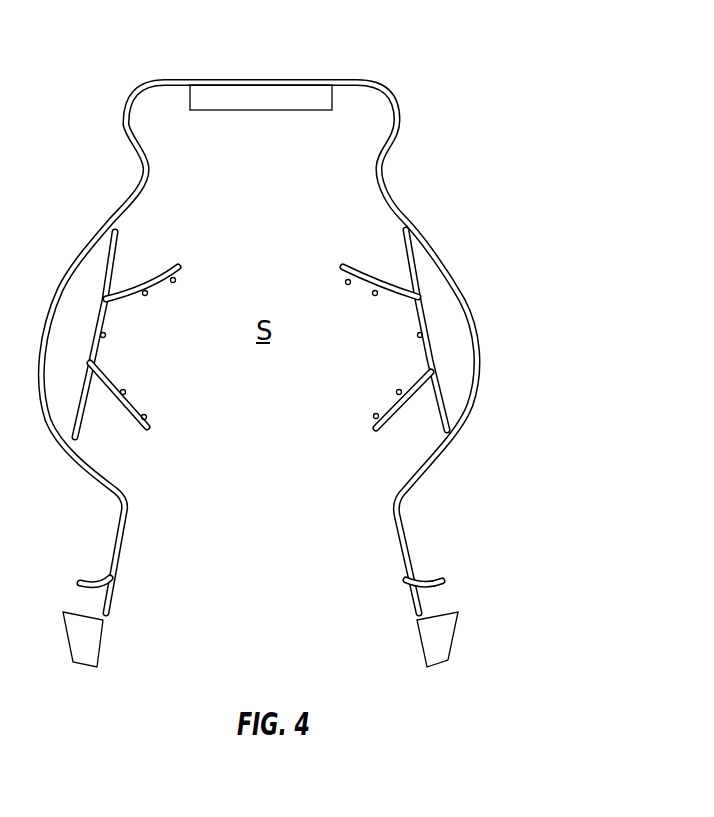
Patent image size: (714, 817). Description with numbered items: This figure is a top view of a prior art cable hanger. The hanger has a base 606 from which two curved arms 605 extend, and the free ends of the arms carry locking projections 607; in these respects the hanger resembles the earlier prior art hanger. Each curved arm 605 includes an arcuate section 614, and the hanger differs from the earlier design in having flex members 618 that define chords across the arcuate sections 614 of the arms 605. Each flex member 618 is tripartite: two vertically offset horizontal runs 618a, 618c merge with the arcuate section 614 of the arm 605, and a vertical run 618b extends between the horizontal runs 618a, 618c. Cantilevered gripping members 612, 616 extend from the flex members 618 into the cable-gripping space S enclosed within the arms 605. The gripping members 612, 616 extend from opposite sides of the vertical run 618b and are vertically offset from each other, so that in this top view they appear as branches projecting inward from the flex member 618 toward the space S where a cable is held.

The curved arms 605 is at (404, 230).
The base 606 is at (352, 82).
The locking projections 607 is at (443, 637).
The cantilevered gripping member 612 is at (367, 277).
The arcuate sections 614 is at (510, 292).
The cantilevered gripping member 616 is at (393, 412).
The flex members 618 is at (447, 325).
The horizontal run 618a is at (420, 291).
The vertical run 618b is at (430, 342).
The horizontal run 618c is at (445, 400).